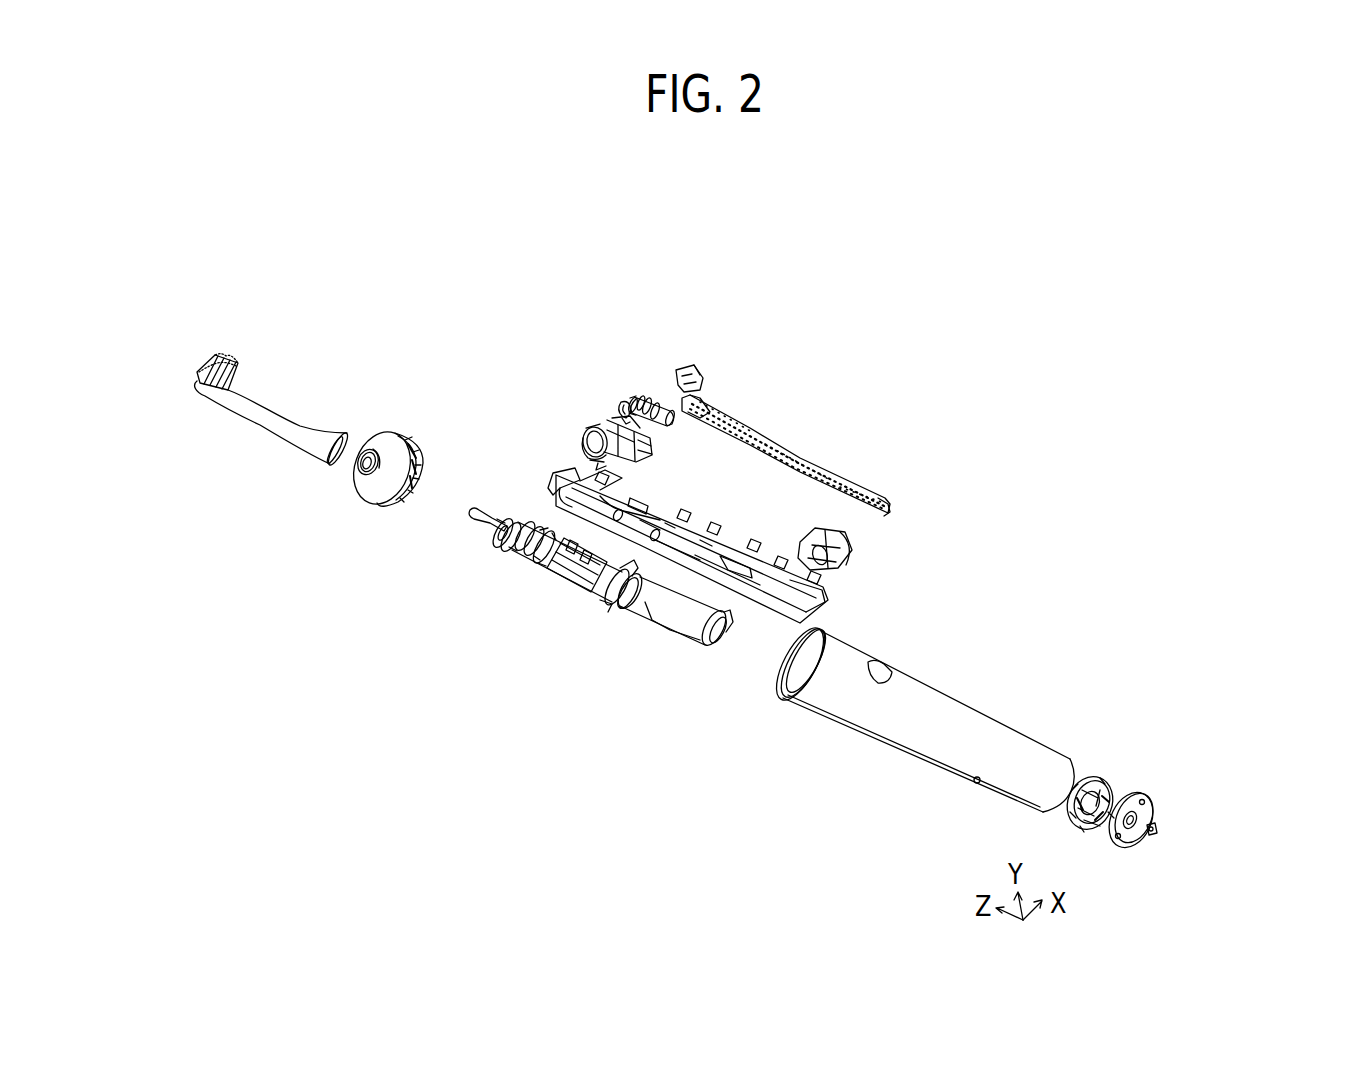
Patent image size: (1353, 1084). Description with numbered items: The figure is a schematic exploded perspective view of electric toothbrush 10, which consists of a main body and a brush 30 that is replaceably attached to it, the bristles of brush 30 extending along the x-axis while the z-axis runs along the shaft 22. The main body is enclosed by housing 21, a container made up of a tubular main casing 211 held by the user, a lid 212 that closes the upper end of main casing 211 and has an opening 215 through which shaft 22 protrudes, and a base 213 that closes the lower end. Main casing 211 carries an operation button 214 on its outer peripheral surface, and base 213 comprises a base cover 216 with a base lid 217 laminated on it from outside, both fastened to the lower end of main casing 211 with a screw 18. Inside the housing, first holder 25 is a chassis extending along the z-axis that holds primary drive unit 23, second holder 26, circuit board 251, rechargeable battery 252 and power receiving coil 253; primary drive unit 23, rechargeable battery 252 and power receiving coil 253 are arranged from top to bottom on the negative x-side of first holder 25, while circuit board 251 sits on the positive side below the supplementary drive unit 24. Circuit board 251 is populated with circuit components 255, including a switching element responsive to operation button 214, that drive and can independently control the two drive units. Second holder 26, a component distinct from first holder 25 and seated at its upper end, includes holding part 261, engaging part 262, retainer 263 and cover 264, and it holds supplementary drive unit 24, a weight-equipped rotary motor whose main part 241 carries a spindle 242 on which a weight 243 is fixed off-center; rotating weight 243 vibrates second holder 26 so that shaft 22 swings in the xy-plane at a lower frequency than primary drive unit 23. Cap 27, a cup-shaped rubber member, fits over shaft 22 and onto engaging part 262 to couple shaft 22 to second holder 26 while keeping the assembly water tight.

The electric toothbrush 10 is at (972, 380).
The screw 18 is at (1156, 830).
The housing 21 is at (807, 788).
The shaft 22 is at (478, 523).
The primary drive unit 23 is at (563, 573).
The supplementary drive unit 24 is at (567, 256).
The first holder 25 is at (727, 547).
The second holder 26 is at (492, 395).
The cap 27 is at (504, 540).
The brush 30 is at (245, 408).
The main casing 211 is at (915, 740).
The lid 212 is at (370, 490).
The base 213 is at (1212, 730).
The operation button 214 is at (882, 672).
The opening 215 is at (365, 472).
The base cover 216 is at (1107, 792).
The base lid 217 is at (1148, 801).
The main part 241 is at (659, 400).
The spindle 242 is at (647, 398).
The weight 243 is at (627, 395).
The circuit board 251 is at (768, 440).
The rechargeable battery 252 is at (653, 603).
The power receiving coil 253 is at (832, 566).
The circuit components 255 is at (708, 410).
The holding part 261 is at (652, 448).
The engaging part 262 is at (588, 444).
The retainer 263 is at (618, 407).
The cover 264 is at (692, 373).